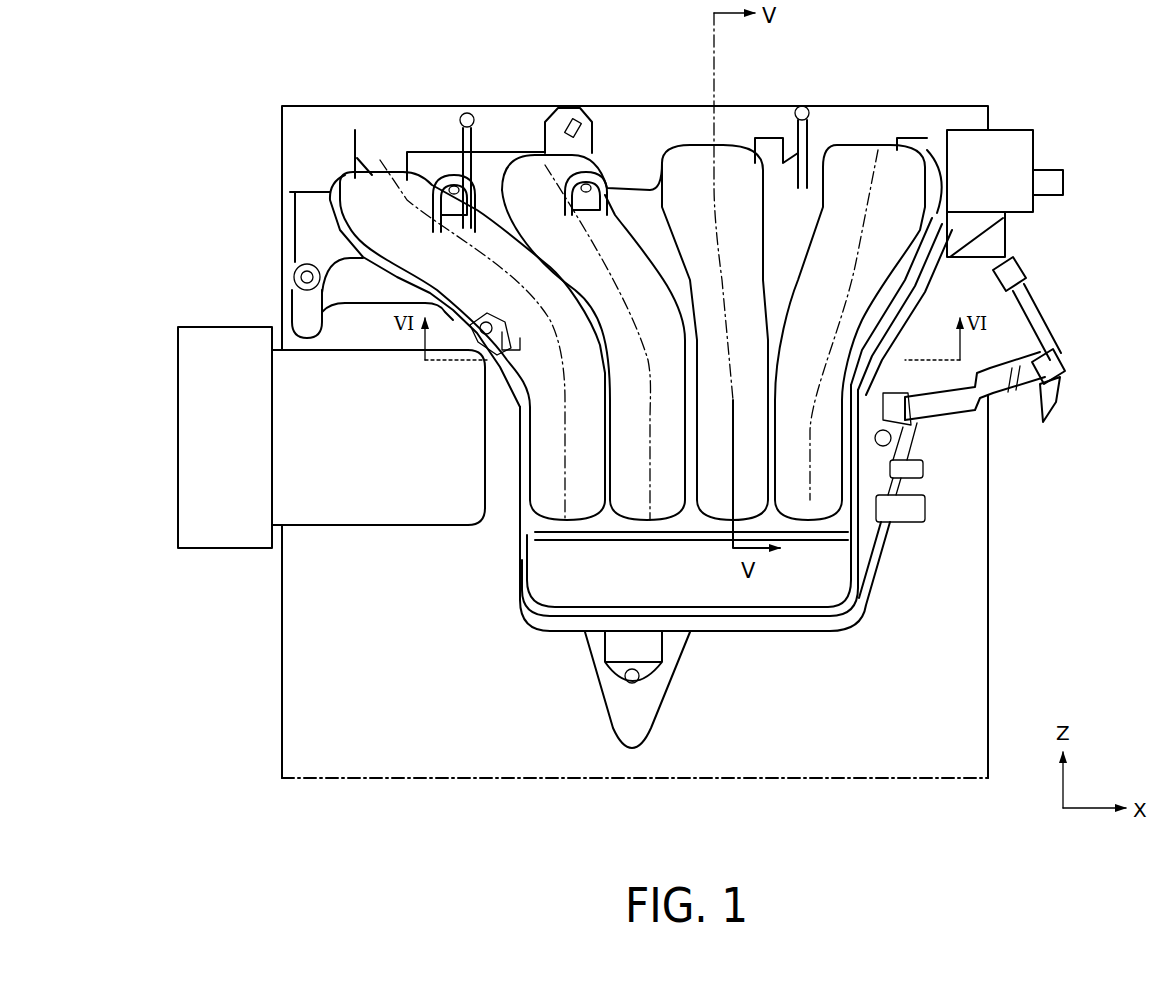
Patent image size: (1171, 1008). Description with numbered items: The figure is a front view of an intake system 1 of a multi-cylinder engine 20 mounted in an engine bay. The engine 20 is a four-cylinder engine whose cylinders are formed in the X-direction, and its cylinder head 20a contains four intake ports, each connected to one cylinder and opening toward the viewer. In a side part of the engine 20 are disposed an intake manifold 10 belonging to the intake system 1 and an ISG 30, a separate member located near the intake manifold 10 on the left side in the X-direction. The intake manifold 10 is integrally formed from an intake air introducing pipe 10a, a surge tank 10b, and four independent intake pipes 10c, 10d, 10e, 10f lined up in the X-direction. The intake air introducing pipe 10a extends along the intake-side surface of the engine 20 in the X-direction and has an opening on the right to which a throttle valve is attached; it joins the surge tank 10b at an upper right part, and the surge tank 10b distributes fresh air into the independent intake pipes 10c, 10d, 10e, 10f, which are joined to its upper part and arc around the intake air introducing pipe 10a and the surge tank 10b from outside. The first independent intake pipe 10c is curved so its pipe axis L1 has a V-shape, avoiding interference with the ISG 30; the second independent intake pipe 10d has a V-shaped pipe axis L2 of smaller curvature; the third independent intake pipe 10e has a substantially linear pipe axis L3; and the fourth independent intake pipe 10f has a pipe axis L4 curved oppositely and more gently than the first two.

The intake system 1 is at (1085, 113).
The intake manifold 10 is at (878, 488).
The intake air introducing pipe 10a is at (1003, 323).
The surge tank 10b is at (783, 565).
The first independent intake pipe 10c is at (407, 203).
The second independent intake pipe 10d is at (550, 183).
The third independent intake pipe 10e is at (718, 175).
The fourth independent intake pipe 10f is at (867, 178).
The engine 20 is at (313, 128).
The cylinder head 20a is at (316, 168).
The ISG (Integrated Starter-Generator) 30 is at (220, 508).
The pipe axis L1 is at (560, 388).
The pipe axis L2 is at (621, 236).
The pipe axis L3 is at (728, 230).
The pipe axis L4 is at (852, 268).